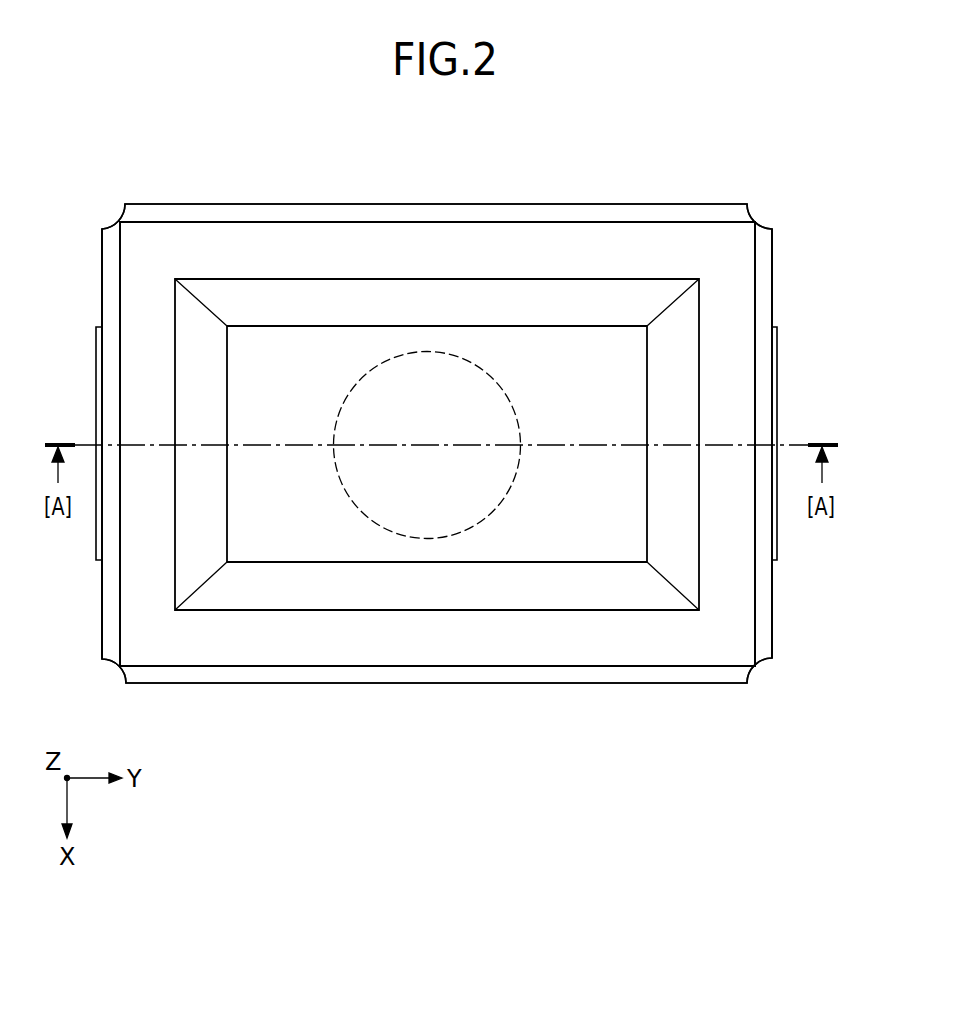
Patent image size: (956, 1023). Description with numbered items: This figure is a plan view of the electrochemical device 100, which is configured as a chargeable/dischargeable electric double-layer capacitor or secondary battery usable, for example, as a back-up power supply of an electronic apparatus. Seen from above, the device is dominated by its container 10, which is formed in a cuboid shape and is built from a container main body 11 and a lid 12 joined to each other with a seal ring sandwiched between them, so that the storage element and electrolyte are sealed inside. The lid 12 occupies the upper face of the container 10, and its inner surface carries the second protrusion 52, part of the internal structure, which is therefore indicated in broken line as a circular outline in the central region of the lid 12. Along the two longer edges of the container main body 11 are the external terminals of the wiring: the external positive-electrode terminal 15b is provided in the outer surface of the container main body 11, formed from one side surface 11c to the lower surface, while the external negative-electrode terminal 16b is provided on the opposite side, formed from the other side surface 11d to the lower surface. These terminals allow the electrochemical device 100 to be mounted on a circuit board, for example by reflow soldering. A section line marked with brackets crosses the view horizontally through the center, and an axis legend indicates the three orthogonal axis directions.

The electrochemical device 100 is at (683, 166).
The container 10 is at (296, 204).
The lid 12 is at (148, 247).
The container main body 11 is at (106, 298).
The one side surface 11c is at (101, 600).
The other side surface 11d is at (772, 294).
The external positive-electrode terminal 15b is at (100, 385).
The external negative-electrode terminal 16b is at (777, 393).
The second protrusion 52 is at (434, 352).